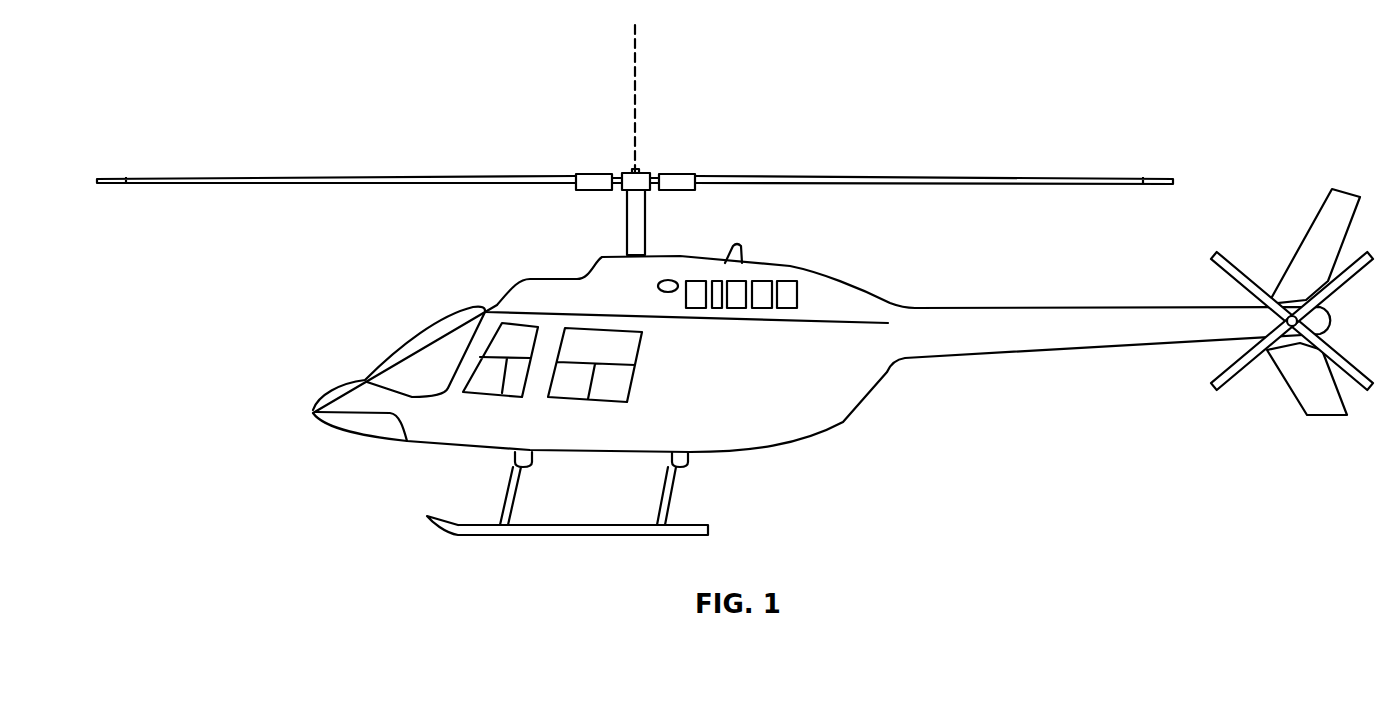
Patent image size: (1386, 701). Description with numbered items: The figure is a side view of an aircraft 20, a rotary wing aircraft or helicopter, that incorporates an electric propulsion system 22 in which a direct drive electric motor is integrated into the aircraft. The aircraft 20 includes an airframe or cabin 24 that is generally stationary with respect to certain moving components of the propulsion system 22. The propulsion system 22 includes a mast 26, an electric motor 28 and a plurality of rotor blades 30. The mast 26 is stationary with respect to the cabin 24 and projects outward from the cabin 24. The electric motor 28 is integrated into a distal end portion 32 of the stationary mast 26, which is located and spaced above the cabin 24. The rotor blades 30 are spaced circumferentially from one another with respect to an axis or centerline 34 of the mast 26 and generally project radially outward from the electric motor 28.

The aircraft 20 is at (1188, 100).
The electric propulsion system 22 is at (688, 147).
The airframe or cabin 24 is at (847, 422).
The mast 26 is at (614, 236).
The electric motor 28 is at (635, 172).
The rotor blades 30 is at (258, 182).
The distal end portion 32 is at (645, 237).
The axis or centerline 34 is at (637, 82).